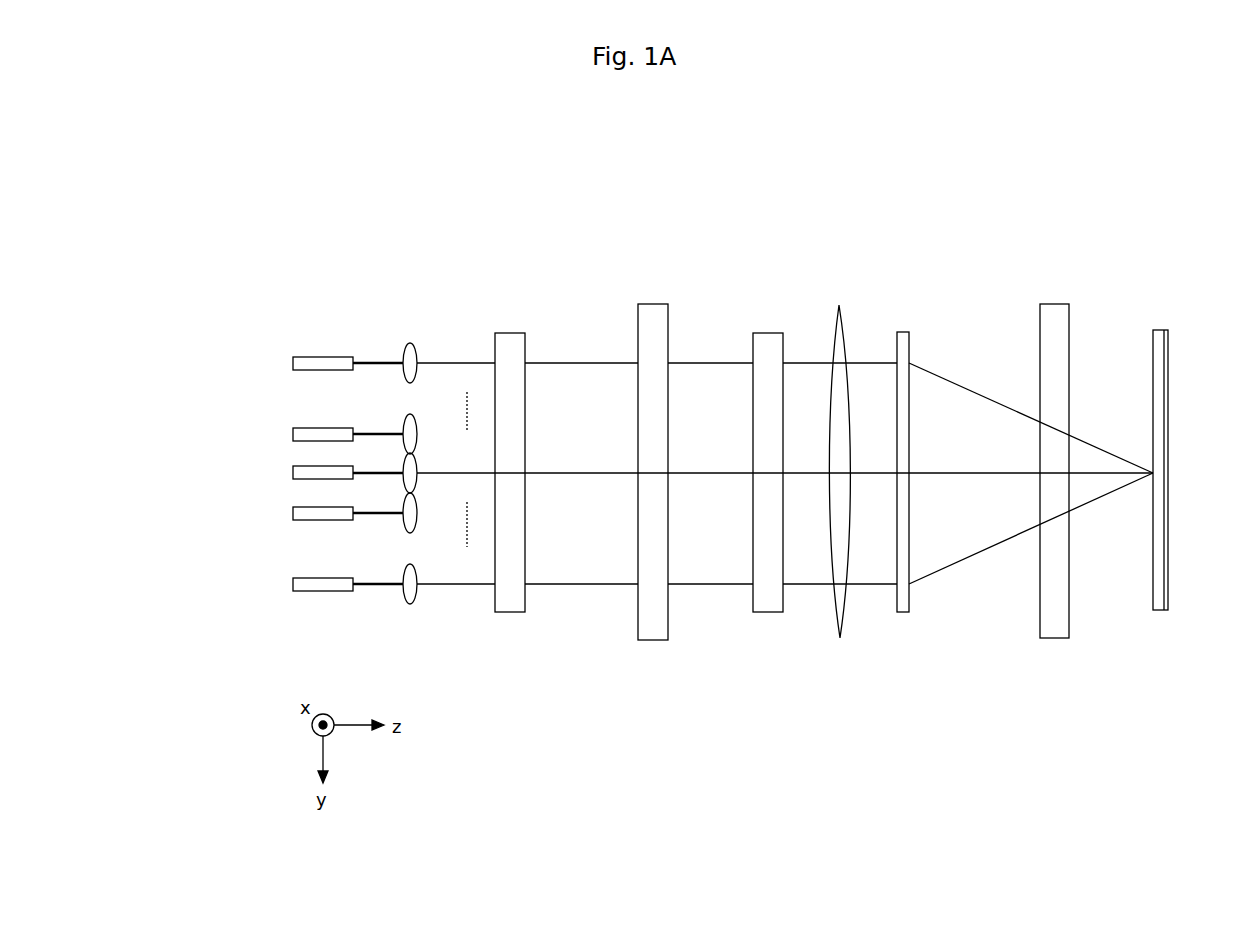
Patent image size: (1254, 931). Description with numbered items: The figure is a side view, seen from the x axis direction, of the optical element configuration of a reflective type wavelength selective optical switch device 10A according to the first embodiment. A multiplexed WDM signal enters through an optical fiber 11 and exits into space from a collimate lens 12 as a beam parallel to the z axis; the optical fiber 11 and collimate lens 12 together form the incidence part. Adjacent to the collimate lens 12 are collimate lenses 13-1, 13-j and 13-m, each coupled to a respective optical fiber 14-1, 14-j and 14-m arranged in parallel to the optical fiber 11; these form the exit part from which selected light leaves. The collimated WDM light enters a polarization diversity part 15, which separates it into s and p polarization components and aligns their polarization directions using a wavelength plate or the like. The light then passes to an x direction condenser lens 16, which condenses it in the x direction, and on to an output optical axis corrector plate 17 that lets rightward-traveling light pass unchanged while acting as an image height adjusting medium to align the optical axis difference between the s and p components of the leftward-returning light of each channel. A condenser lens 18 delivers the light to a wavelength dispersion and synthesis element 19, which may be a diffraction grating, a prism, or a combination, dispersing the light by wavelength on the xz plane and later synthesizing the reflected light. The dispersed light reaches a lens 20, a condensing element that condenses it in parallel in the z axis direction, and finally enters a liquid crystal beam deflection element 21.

The reflective type wavelength selective optical switch device 10A is at (982, 249).
The optical fiber 11 is at (293, 472).
The collimate lens 12 is at (405, 484).
The collimate lens 13-1 is at (405, 352).
The collimate lens 13-j is at (405, 422).
The collimate lens 13-m is at (405, 597).
The optical fiber 14-1 is at (315, 357).
The optical fiber 14-j is at (315, 428).
The optical fiber 14-m is at (315, 591).
The polarization diversity part 15 is at (510, 333).
The x direction condenser lens 16 is at (655, 304).
The output optical axis corrector plate 17 is at (770, 333).
The condenser lens 18 is at (847, 338).
The wavelength dispersion and synthesis element 19 is at (905, 332).
The lens 20 is at (1055, 304).
The liquid crystal beam deflection element 21 is at (1162, 330).